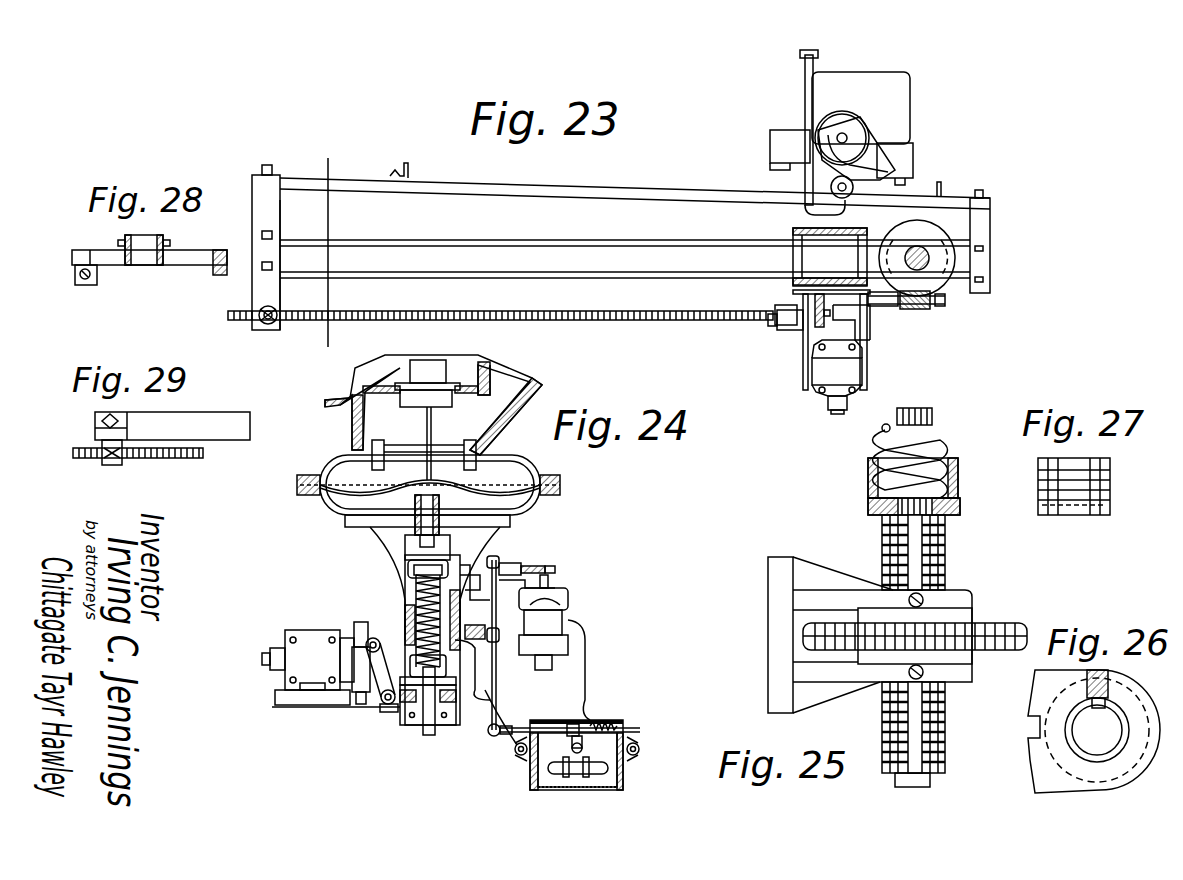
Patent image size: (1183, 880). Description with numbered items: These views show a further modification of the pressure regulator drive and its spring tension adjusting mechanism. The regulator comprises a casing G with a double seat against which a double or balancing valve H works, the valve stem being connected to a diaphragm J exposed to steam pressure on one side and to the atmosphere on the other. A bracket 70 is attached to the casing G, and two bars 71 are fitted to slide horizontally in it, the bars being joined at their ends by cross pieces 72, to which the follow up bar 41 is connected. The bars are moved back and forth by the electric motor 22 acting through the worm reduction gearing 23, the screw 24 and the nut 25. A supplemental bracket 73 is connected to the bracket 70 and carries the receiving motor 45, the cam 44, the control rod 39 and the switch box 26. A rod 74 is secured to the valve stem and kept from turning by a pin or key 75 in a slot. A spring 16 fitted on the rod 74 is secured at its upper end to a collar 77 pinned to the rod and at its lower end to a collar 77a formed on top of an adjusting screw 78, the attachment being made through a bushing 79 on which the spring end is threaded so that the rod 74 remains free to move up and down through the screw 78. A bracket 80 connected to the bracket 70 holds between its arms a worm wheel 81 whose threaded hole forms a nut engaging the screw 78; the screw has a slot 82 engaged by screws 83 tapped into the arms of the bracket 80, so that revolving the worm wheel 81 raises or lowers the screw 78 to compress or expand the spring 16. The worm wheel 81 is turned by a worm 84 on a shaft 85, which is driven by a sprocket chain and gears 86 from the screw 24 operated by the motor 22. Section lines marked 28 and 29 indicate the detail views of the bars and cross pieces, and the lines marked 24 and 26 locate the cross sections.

In FIG. 24, the spring 16 is at (416, 598).
In FIG. 25, the spring 16 is at (940, 436).
In FIG. 23, the electric motor 22 is at (837, 377).
In FIG. 24, the electric motor 22 is at (312, 630).
In FIG. 23, the worm reduction gearing 23 is at (850, 340).
In FIG. 23, the screw 24 is at (658, 322).
In FIG. 28, the screw 24 is at (88, 285).
In FIG. 29, the screw 24 is at (175, 460).
In FIG. 23, the nut 25 is at (278, 310).
In FIG. 28, the nut 25 is at (75, 282).
In FIG. 29, the nut 25 is at (114, 466).
In FIG. 24, the switch box 26 is at (626, 780).
In FIG. 25, the switch box 26 is at (878, 720).
In FIG. 23, the section line 28 is at (330, 165).
In FIG. 23, the section view arrow 29 is at (268, 335).
In FIG. 24, the control rod 39 is at (490, 682).
In FIG. 23, the follow up bar 41 is at (618, 195).
In FIG. 28, the follow up bar 41 is at (220, 250).
In FIG. 23, the cam 44 is at (850, 166).
In FIG. 24, the cam 44 is at (520, 565).
In FIG. 23, the receiving motor 45 is at (855, 125).
In FIG. 24, the receiving motor 45 is at (570, 597).
In FIG. 23, the bracket 70 is at (795, 229).
In FIG. 24, the bracket 70 is at (378, 535).
In FIG. 23, the bars 71 is at (560, 232).
In FIG. 28, the bars 71 is at (128, 265).
In FIG. 29, the bars 71 is at (250, 427).
In FIG. 24, the bars 71 is at (274, 425).
In FIG. 23, the cross pieces 72 is at (282, 218).
In FIG. 28, the cross pieces 72 is at (196, 265).
In FIG. 24, the supplemental bracket 73 is at (585, 678).
In FIG. 24, the rod or stem 74 is at (434, 734).
In FIG. 25, the rod or stem 74 is at (935, 400).
In FIG. 24, the pin or key 75 is at (440, 545).
In FIG. 24, the collar 77 is at (408, 570).
In FIG. 24, the collar 77a is at (446, 662).
In FIG. 25, the collar 77a is at (958, 472).
In FIG. 24, the adjusting screw 78 is at (418, 722).
In FIG. 25, the adjusting screw 78 is at (945, 558).
In FIG. 27, the bushing 79 is at (1080, 515).
In FIG. 25, the bracket 80 is at (972, 594).
In FIG. 23, the worm wheel 81 is at (945, 285).
In FIG. 25, the worm wheel 81 is at (995, 625).
In FIG. 25, the slot 82 is at (930, 708).
In FIG. 25, the screws 83 is at (912, 602).
In FIG. 26, the screws 83 is at (1108, 688).
In FIG. 23, the worm 84 is at (930, 308).
In FIG. 23, the shaft 85 is at (882, 308).
In FIG. 23, the sprocket chain and gears 86 is at (818, 330).
In FIG. 24, the sprocket chain and gears 86 is at (375, 700).
In FIG. 24, the casing G is at (540, 385).
In FIG. 24, the double or balancing valve H is at (452, 398).
In FIG. 24, the diaphragm J is at (335, 498).